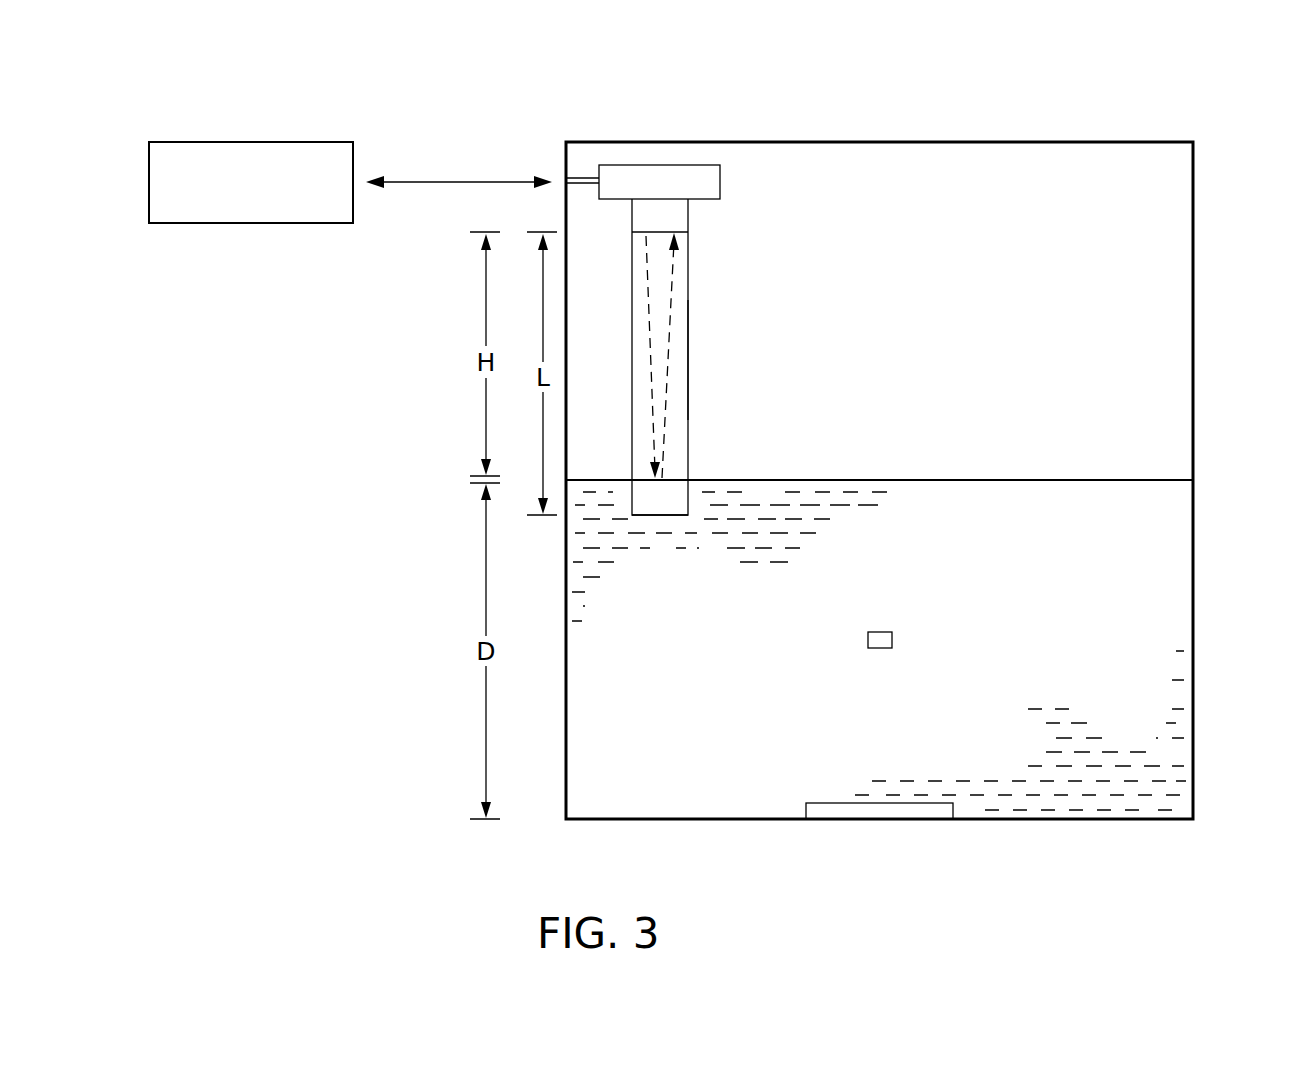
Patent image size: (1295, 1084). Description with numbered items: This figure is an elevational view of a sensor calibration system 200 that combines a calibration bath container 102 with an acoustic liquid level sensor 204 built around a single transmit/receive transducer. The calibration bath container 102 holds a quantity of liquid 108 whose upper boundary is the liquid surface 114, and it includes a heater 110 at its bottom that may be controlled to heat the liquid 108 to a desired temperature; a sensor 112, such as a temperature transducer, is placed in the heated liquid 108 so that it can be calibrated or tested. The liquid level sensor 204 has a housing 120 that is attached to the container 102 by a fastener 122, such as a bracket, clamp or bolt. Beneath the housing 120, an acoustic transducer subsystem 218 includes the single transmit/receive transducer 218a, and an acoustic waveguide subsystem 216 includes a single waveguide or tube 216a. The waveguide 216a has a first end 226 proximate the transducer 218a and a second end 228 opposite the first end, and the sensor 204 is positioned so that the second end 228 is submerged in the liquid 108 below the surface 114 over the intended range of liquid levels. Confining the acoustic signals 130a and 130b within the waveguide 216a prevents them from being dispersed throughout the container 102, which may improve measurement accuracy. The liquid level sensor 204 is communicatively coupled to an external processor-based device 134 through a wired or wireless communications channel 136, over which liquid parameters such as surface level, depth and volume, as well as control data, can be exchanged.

The calibration bath container 102 is at (1193, 197).
The sensor calibration system 200 is at (1084, 70).
The liquid level sensor 204 is at (797, 192).
The liquid surface 114 is at (1135, 478).
The liquid 108 is at (1143, 640).
The heater 110 is at (902, 822).
The sensor 112 is at (892, 636).
The housing 120 is at (639, 180).
The fastener 122 is at (583, 178).
The acoustic transducer subsystem 218 is at (700, 213).
The transmit/receive transducer 218a is at (642, 220).
The first end 226 is at (688, 232).
The acoustic waveguide subsystem 216 is at (706, 394).
The waveguide 216a is at (688, 358).
The acoustic signal 130a is at (650, 333).
The acoustic signal 130b is at (672, 335).
The second end 228 is at (688, 515).
The external processor-based device 134 is at (227, 141).
The communications channel 136 is at (477, 182).